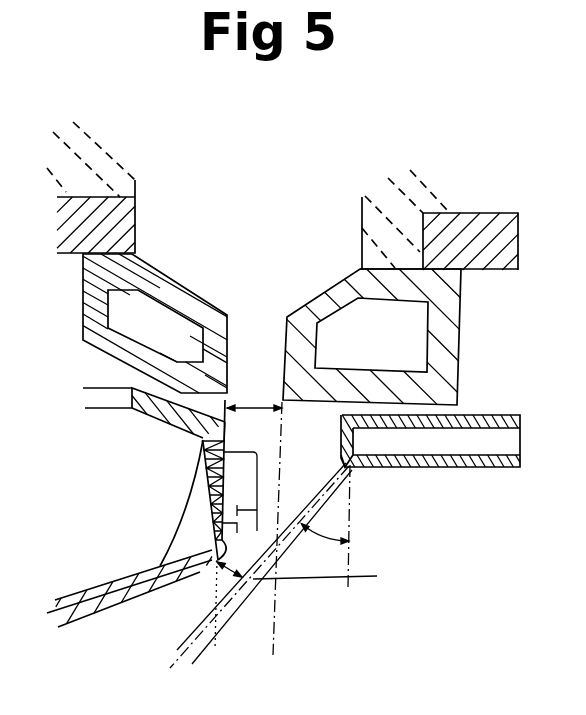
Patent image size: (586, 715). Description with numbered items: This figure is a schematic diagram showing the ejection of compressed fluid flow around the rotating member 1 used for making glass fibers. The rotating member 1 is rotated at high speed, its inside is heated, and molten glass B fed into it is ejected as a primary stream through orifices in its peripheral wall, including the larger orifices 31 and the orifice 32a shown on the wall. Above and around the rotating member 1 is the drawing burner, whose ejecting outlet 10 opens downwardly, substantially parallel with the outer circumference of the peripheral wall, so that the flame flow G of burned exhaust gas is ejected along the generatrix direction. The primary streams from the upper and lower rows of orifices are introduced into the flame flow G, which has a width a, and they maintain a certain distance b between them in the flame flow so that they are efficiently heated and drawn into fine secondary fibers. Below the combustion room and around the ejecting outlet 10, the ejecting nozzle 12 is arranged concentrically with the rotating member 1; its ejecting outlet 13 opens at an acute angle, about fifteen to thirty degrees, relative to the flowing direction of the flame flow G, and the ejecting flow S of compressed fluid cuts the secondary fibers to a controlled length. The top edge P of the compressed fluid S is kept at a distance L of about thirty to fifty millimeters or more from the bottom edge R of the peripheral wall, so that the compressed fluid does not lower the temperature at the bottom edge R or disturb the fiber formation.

The rotating member 1 is at (83, 623).
The ejecting outlet 10 is at (228, 352).
The ejecting nozzle 12 is at (462, 468).
The ejecting outlet 13 is at (352, 468).
The larger orifices 31 is at (203, 452).
The blade edge 32a is at (212, 521).
The molten glass B is at (185, 543).
The bottom edge of the peripheral wall R is at (188, 542).
The distance L is at (232, 597).
The top edge of the compressed fluid P is at (186, 631).
The flame flow G is at (258, 642).
The ejecting flow of compressed fluid S is at (323, 530).
The width of the flame flow a is at (254, 395).
The distance between primary streams b is at (240, 491).